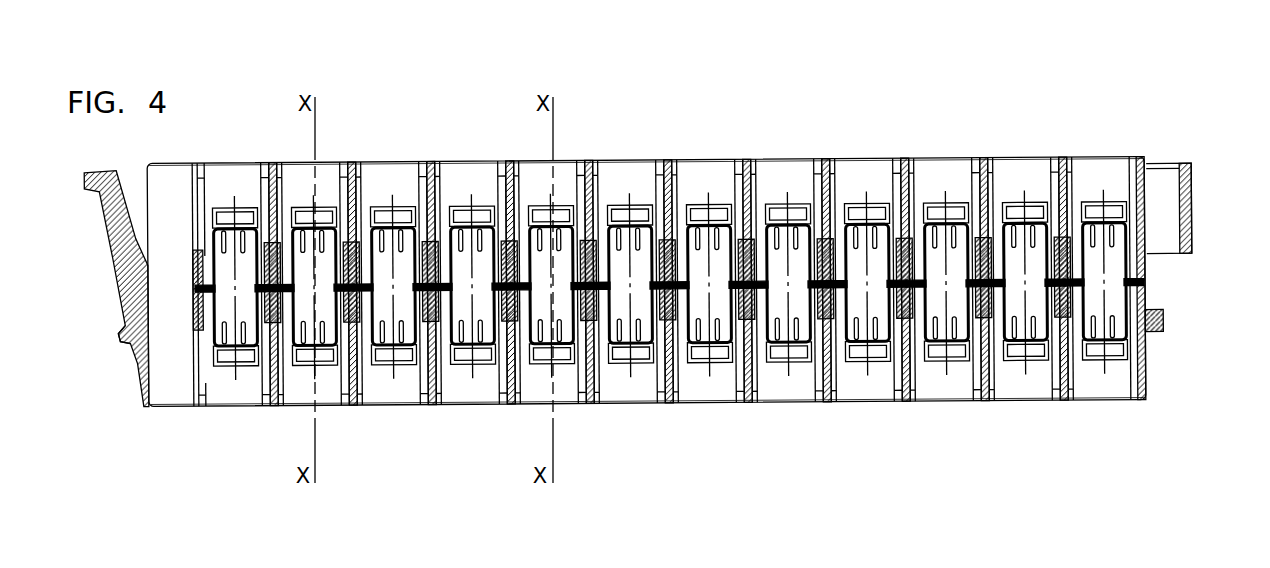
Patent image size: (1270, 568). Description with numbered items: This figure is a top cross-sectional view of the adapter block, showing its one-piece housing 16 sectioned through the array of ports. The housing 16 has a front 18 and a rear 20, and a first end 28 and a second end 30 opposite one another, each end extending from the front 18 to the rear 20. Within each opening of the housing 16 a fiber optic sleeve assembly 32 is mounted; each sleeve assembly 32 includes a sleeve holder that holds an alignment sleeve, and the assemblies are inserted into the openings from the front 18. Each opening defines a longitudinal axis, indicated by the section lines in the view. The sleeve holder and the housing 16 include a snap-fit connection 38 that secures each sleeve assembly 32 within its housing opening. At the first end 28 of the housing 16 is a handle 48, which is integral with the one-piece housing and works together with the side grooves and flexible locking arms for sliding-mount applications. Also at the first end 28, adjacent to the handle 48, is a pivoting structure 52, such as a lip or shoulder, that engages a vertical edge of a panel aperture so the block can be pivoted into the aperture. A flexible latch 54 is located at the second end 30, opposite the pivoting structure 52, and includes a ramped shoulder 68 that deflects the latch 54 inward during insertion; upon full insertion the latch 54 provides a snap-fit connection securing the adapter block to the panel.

The one-piece housing 16 is at (493, 162).
The front 18 is at (653, 254).
The rear 20 is at (873, 417).
The first end 28 is at (1147, 295).
The second end 30 is at (148, 200).
The fiber optic sleeve assembly 32 is at (638, 189).
The snap-fit connection 38 is at (841, 253).
The handle 48 is at (1192, 195).
The pivoting structure 52 is at (1163, 327).
The flexible latch 54 is at (122, 248).
The ramped shoulder 68 is at (123, 330).